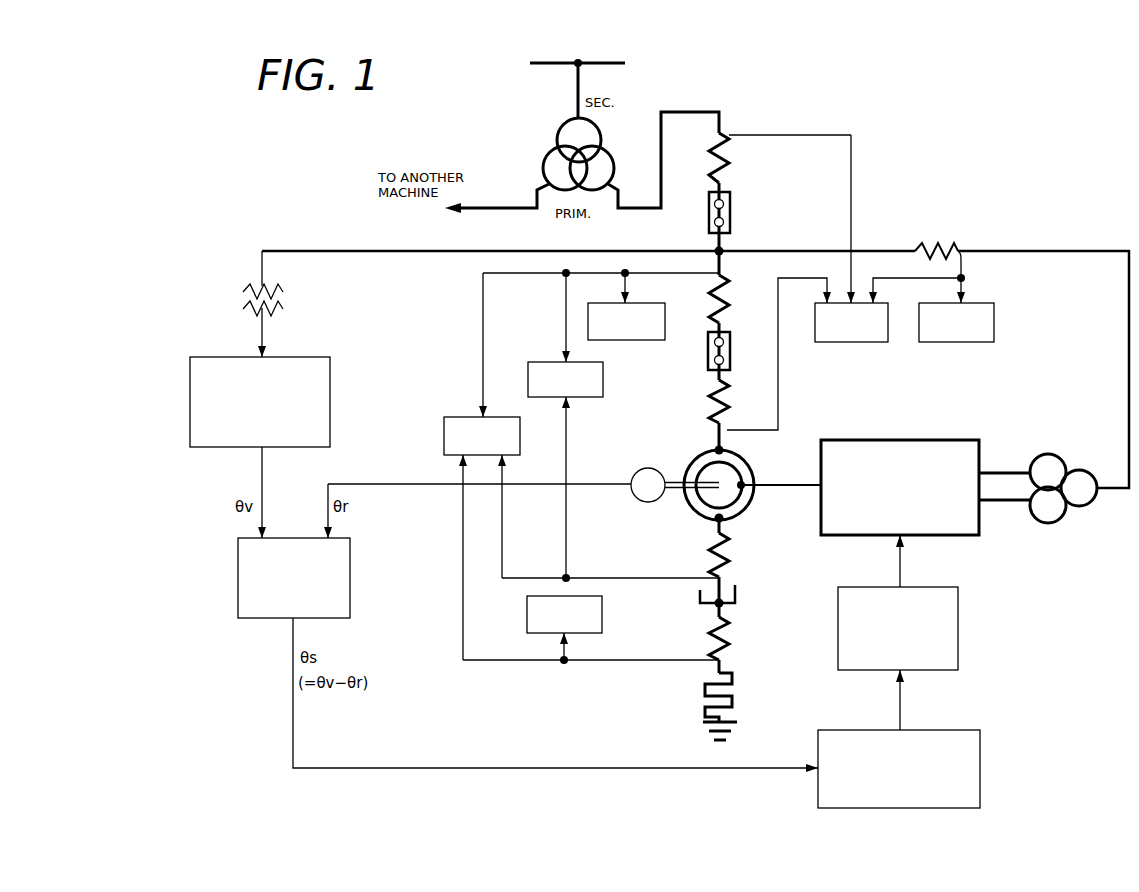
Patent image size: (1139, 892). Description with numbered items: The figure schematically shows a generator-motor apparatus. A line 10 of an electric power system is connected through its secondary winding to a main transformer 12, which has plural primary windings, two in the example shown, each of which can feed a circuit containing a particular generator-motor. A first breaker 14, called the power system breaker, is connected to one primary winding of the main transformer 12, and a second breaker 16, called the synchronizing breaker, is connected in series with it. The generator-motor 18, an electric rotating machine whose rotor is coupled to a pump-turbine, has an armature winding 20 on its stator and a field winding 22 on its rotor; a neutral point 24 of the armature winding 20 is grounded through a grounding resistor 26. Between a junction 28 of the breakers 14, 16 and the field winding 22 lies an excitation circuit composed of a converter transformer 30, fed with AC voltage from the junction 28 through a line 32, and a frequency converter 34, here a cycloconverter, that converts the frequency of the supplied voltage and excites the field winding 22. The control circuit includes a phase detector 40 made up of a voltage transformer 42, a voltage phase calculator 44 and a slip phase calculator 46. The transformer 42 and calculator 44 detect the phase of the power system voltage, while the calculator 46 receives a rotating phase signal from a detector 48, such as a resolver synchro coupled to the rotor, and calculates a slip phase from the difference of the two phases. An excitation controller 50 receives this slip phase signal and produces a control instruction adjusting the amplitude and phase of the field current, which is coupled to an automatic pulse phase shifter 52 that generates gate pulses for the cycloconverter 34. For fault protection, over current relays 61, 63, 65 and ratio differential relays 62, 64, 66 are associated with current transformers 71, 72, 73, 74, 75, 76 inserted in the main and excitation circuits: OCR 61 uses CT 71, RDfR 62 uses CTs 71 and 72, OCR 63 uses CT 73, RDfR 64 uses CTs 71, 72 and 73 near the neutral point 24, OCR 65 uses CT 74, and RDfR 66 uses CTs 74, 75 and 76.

The power system line 10 is at (535, 67).
The main transformer 12 is at (535, 147).
The first breaker 14 is at (731, 207).
The second breaker 16 is at (732, 346).
The generator-motor 18 is at (720, 480).
The armature winding 20 is at (690, 509).
The field winding 22 is at (742, 505).
The neutral point 24 is at (738, 605).
The grounding resistor 26 is at (705, 700).
The junction 28 is at (716, 250).
The converter transformer 30 is at (1056, 455).
The line 32 is at (1053, 250).
The frequency converter 34 is at (920, 440).
The phase detector 40 is at (239, 349).
The voltage transformer 42 is at (244, 291).
The voltage phase calculator 44 is at (190, 425).
The slip phase calculator 46 is at (238, 603).
The detector 48 is at (638, 469).
The excitation controller 50 is at (980, 762).
The automatic pulse phase shifter 52 is at (960, 620).
The over current relay 61 is at (650, 340).
The ratio differential relay 62 is at (545, 362).
The over current relay 63 is at (602, 618).
The ratio differential relay 64 is at (452, 417).
The over current relay 65 is at (975, 342).
The ratio differential relay 66 is at (873, 342).
The current transformer 71 is at (727, 294).
The current transformer 72 is at (731, 559).
The current transformer 73 is at (732, 641).
The current transformer 74 is at (938, 245).
The current transformer 75 is at (727, 401).
The current transformer 76 is at (731, 164).